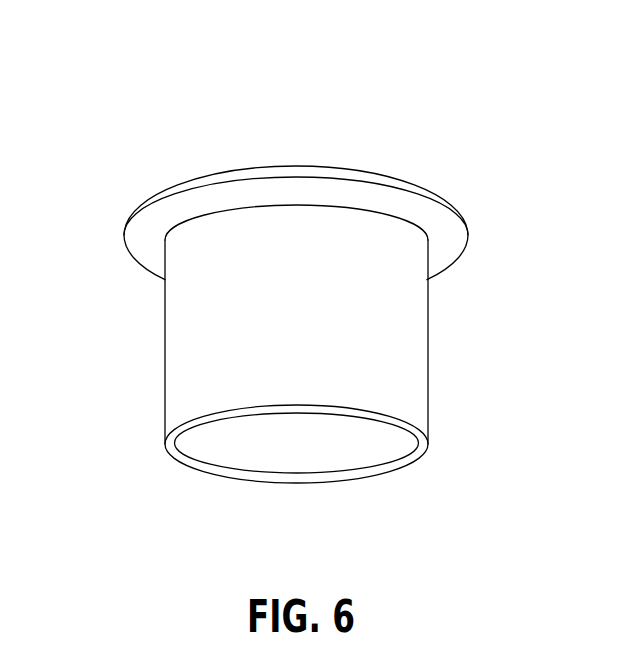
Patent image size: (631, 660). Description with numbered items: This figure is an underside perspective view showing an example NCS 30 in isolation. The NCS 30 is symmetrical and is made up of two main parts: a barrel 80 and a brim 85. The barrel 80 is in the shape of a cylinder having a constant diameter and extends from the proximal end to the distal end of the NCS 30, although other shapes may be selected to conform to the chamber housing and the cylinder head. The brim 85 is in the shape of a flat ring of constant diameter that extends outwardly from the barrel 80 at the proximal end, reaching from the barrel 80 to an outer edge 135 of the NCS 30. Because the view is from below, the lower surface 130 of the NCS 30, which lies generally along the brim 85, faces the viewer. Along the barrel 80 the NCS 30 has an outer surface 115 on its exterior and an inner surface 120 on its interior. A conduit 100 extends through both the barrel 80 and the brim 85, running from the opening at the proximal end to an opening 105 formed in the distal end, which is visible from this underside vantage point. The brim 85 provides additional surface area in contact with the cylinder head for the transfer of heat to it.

The NCS 30 is at (428, 143).
The brim 85 is at (445, 200).
The outer edge 135 is at (132, 217).
The lower surface 130 is at (228, 197).
The barrel 80 is at (428, 303).
The outer surface 115 is at (177, 337).
The conduit 100 is at (255, 452).
The inner surface 120 is at (203, 443).
The opening 105 is at (383, 440).